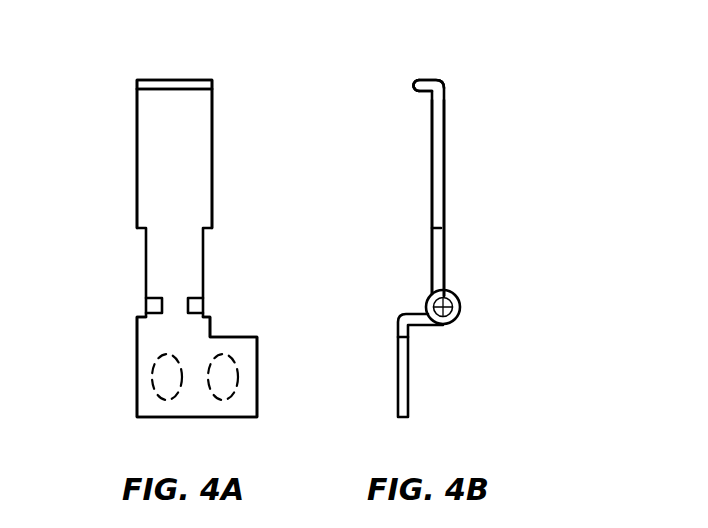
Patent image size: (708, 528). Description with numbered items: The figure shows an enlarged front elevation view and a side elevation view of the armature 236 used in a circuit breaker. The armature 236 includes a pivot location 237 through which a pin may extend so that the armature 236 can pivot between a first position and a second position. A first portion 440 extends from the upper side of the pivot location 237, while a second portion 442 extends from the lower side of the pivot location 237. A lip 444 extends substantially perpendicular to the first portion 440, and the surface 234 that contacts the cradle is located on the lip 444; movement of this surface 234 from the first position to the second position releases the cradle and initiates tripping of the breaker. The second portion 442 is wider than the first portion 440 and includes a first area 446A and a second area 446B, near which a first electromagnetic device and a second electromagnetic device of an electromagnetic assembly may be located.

In FIG. 4A, the surface 234 is at (155, 79).
In FIG. 4B, the surface 234 is at (420, 80).
In FIG. 4A, the armature 236 is at (128, 141).
In FIG. 4B, the armature 236 is at (456, 135).
In FIG. 4A, the pivot location 237 is at (146, 300).
In FIG. 4B, the pivot location 237 is at (445, 306).
In FIG. 4A, the first portion 440 is at (137, 168).
In FIG. 4B, the first portion 440 is at (444, 175).
In FIG. 4A, the second portion 442 is at (137, 355).
In FIG. 4B, the second portion 442 is at (408, 367).
In FIG. 4A, the lip 444 is at (212, 84).
In FIG. 4B, the lip 444 is at (425, 91).
In FIG. 4A, the first area 446A is at (151, 373).
In FIG. 4A, the second area 446B is at (238, 375).